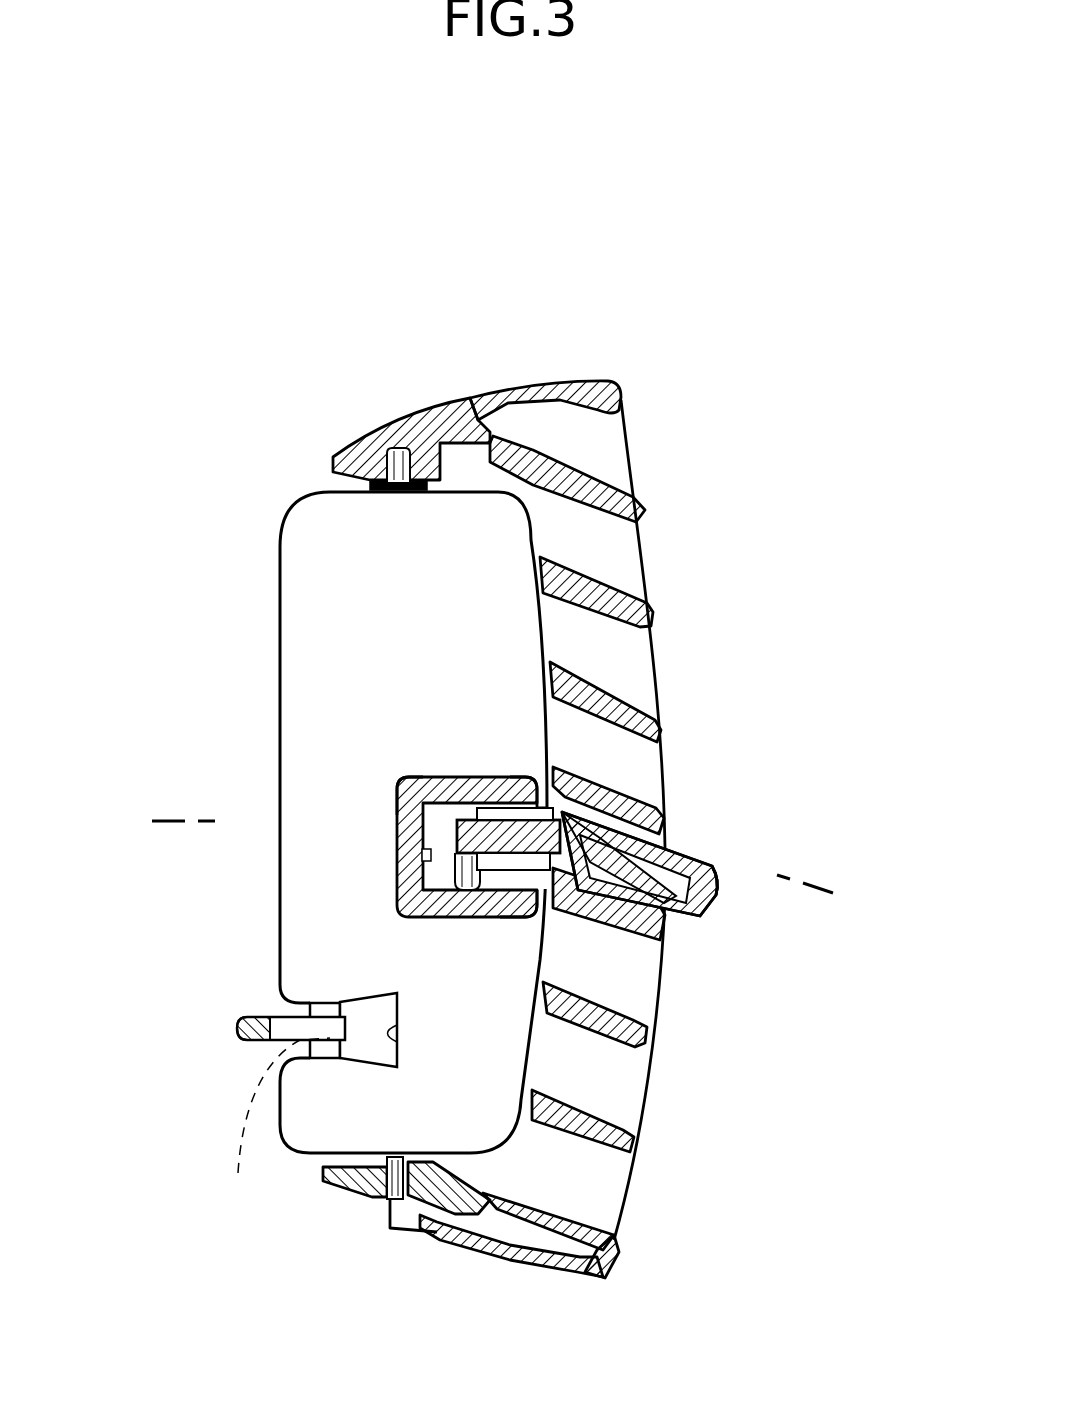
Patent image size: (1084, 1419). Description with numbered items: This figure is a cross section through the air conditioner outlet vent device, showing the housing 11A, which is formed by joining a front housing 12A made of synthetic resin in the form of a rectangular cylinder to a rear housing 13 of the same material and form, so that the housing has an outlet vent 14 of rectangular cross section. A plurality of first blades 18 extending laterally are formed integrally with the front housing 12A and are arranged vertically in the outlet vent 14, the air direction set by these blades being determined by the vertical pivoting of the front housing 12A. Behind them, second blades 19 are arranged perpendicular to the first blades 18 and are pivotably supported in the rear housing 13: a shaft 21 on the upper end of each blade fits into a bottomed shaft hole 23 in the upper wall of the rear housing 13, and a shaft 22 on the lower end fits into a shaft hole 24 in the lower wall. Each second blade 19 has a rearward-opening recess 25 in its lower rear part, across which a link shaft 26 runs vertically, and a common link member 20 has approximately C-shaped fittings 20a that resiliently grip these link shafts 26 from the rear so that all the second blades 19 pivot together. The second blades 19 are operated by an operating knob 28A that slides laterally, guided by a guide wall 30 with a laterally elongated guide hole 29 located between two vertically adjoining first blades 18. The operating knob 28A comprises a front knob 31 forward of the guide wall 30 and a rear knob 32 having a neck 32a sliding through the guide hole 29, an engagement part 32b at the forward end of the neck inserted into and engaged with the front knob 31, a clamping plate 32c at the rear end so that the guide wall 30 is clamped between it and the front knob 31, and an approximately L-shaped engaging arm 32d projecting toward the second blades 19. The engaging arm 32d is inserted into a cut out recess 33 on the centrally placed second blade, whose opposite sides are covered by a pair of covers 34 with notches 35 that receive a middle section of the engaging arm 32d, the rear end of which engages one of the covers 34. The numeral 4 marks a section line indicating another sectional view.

The housing 11A is at (352, 268).
The front housing 12A is at (546, 383).
The rear housing 13 is at (399, 420).
The outlet vent 14 is at (623, 563).
The first blades 18 is at (645, 1047).
The second blades 19 is at (297, 623).
The link member 20 is at (233, 1030).
The fittings 20a is at (347, 1025).
The shaft 21 is at (375, 478).
The shaft 22 is at (390, 1197).
The bottomed shaft holes 23 is at (398, 492).
The shaft holes 24 is at (390, 1157).
The recesses 25 is at (397, 1042).
The link shafts 26 is at (269, 1124).
The operating knob 28A is at (757, 563).
The guide hole 29 is at (603, 928).
The guide wall 30 is at (535, 900).
The front knob 31 is at (697, 850).
The rear knob 32 is at (549, 810).
The neck 32a is at (487, 806).
The engagement part 32b is at (712, 895).
The clamping plate 32c is at (477, 885).
The engaging arm 32d is at (398, 780).
The cut out recess 33 is at (427, 855).
The covers 34 is at (447, 777).
The notches 35 is at (533, 777).
The section line 4- 4 is at (163, 815).